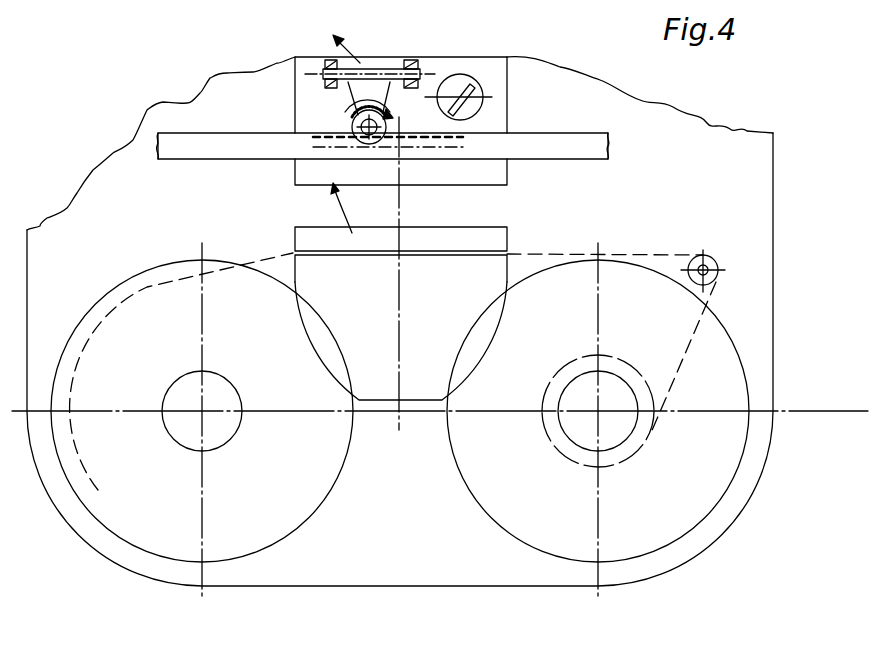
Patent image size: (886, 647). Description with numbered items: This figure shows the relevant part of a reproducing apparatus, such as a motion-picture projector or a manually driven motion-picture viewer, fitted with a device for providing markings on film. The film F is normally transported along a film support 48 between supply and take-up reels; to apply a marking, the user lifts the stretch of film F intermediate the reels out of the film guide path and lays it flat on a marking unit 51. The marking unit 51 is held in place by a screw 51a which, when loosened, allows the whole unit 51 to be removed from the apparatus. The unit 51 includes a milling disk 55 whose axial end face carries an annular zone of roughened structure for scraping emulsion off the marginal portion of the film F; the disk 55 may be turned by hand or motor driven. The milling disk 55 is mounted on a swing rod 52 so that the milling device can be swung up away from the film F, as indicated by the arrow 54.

The film support 48 is at (433, 233).
The marking unit 51 is at (500, 63).
The screw 51a is at (460, 92).
The swing rod 52 is at (383, 80).
The arrow 54 is at (358, 80).
The milling disk 55 is at (363, 124).
The film F is at (563, 142).